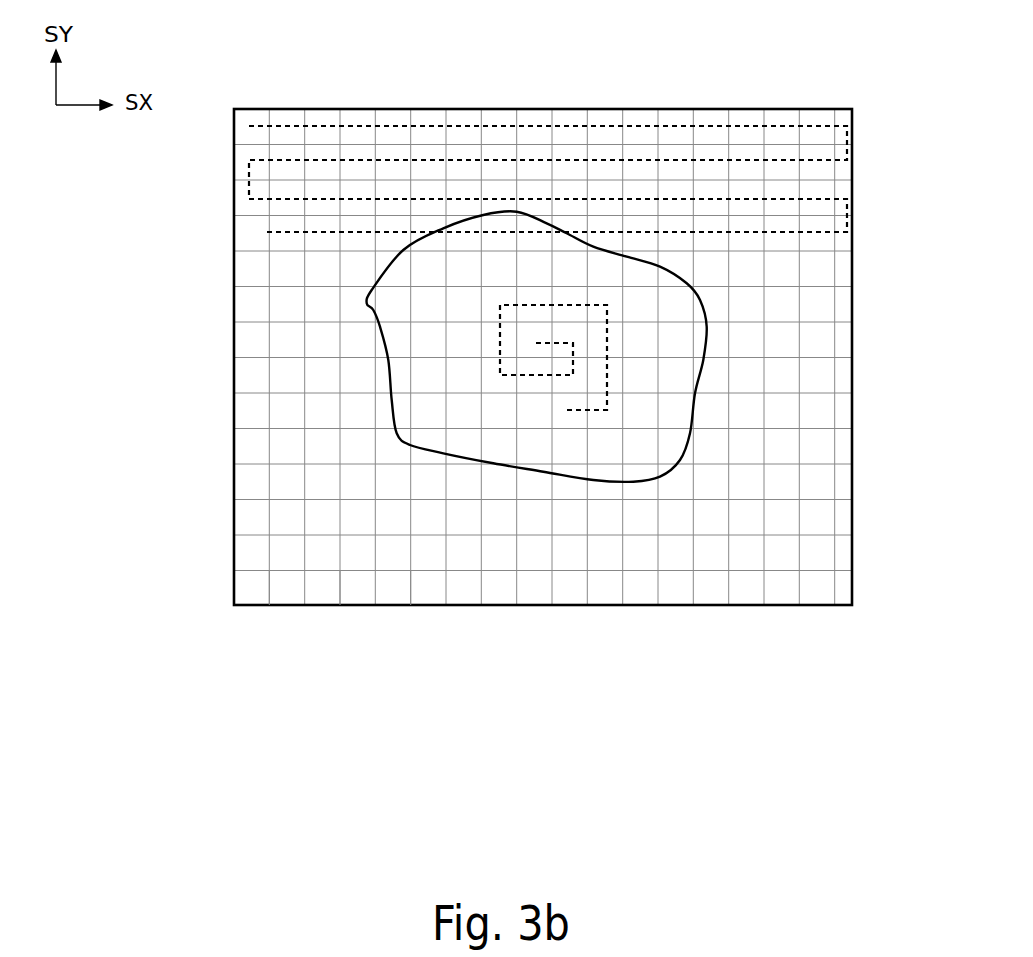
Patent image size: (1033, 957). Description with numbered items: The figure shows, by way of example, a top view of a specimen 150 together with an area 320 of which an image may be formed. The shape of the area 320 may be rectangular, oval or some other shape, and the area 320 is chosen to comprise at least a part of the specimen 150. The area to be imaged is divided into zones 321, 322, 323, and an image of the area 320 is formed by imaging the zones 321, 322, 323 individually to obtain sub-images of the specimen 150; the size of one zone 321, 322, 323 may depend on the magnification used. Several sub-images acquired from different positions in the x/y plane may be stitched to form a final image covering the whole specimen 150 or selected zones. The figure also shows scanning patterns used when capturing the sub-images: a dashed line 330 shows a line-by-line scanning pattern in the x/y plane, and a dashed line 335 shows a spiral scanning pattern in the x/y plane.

The area 320 is at (737, 605).
The zone 321 is at (292, 580).
The zone 322 is at (359, 585).
The zone 323 is at (427, 590).
The dashed line 330 is at (785, 124).
The specimen 150 is at (637, 483).
The dashed line 335 is at (580, 412).